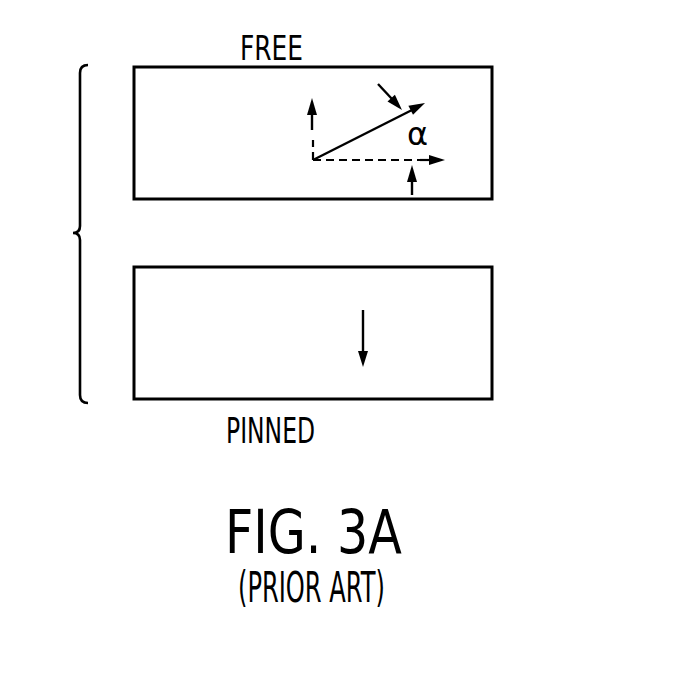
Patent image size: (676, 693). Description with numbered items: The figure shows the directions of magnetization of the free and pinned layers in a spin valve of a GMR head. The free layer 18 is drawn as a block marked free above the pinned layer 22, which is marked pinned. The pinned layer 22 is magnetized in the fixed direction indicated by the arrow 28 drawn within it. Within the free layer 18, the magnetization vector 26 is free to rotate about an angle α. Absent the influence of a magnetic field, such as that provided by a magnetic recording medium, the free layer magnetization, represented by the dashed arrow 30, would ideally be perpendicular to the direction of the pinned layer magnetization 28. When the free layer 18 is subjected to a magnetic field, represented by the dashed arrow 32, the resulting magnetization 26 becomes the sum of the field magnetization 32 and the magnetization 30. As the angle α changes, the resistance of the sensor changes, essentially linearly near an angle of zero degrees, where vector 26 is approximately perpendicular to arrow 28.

The free layer 18 is at (466, 82).
The pinned layer 22 is at (477, 333).
The magnetization vector 26 is at (368, 132).
The arrow 28 is at (367, 327).
The arrow 30 is at (353, 162).
The arrow 32 is at (313, 141).